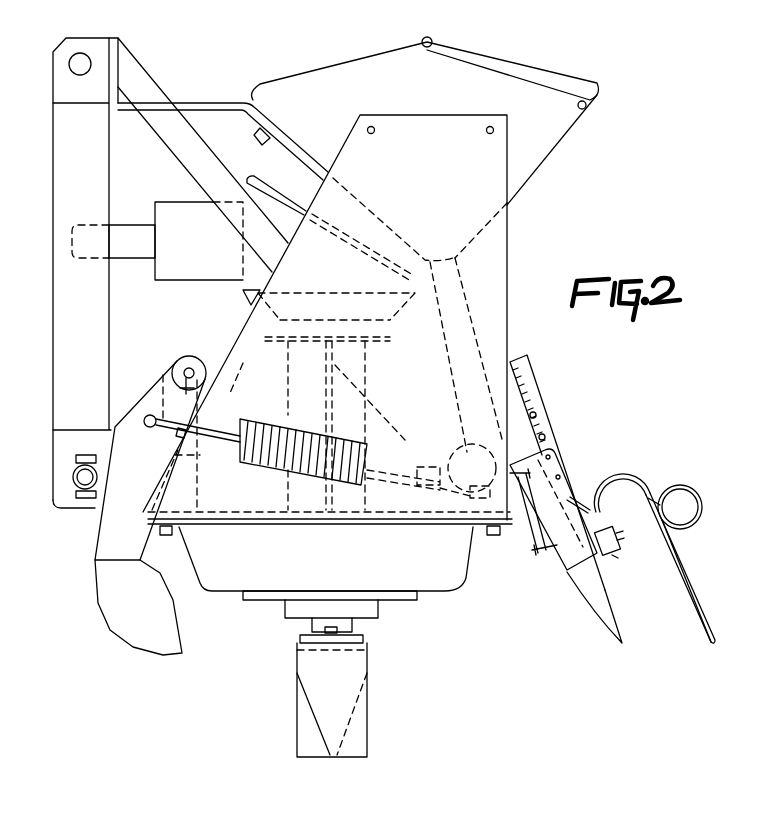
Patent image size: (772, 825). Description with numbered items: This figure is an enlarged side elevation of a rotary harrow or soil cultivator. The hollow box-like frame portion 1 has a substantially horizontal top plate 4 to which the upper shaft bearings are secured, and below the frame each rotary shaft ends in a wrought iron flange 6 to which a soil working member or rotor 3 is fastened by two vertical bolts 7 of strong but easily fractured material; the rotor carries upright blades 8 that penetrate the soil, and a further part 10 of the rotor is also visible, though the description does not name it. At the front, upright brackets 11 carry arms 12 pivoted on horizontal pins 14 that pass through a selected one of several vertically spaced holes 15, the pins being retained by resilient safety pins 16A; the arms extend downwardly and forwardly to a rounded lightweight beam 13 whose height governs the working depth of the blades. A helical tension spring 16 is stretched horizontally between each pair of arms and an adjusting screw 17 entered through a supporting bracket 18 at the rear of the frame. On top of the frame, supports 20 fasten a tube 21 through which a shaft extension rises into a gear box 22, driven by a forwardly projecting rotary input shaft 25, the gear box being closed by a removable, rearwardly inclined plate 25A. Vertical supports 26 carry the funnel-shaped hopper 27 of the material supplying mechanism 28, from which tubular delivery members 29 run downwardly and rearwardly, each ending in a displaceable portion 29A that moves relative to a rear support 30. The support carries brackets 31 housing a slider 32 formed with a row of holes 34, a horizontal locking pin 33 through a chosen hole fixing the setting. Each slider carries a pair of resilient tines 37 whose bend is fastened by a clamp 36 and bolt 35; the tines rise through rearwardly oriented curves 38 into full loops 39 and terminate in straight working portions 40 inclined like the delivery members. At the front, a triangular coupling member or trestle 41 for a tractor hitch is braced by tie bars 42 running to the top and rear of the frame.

The frame portion 1 is at (200, 548).
The soil working member or rotor 3 is at (297, 672).
The top plate 4 is at (390, 517).
The flange 6 is at (300, 638).
The bolts 7 is at (330, 636).
The blades 8 is at (362, 708).
The cone wall 10 is at (315, 720).
The brackets 11 is at (185, 491).
The arms 12 is at (100, 530).
The beam 13 is at (102, 583).
The pins 14 is at (210, 357).
The holes 15 is at (195, 409).
The helical tension spring 16 is at (378, 458).
The safety pins 16A is at (182, 360).
The adjusting screw 17 is at (465, 460).
The supporting brackets 18 is at (482, 472).
The supports 20 is at (322, 378).
The tube 21 is at (285, 372).
The gear box 22 is at (260, 192).
The rotary input shaft 25 is at (130, 222).
The removable plate 25A is at (290, 202).
The supports 26 is at (404, 130).
The hopper 27 is at (575, 136).
The mechanism 28 is at (359, 57).
The tubular delivery members 29 is at (543, 357).
The displaceable portion 29A is at (590, 598).
The support 30 is at (535, 548).
The brackets 31 is at (562, 560).
The slider 32 is at (534, 395).
The locking pin 33 is at (594, 512).
The holes 34 is at (545, 434).
The bolt 35 is at (612, 530).
The clamp 36 is at (618, 558).
The tines 37 is at (654, 476).
The curves 38 is at (625, 480).
The loops 39 is at (688, 487).
The straight working portions 40 is at (690, 577).
The coupling member or trestle 41 is at (66, 292).
The tie bars 42 is at (150, 82).